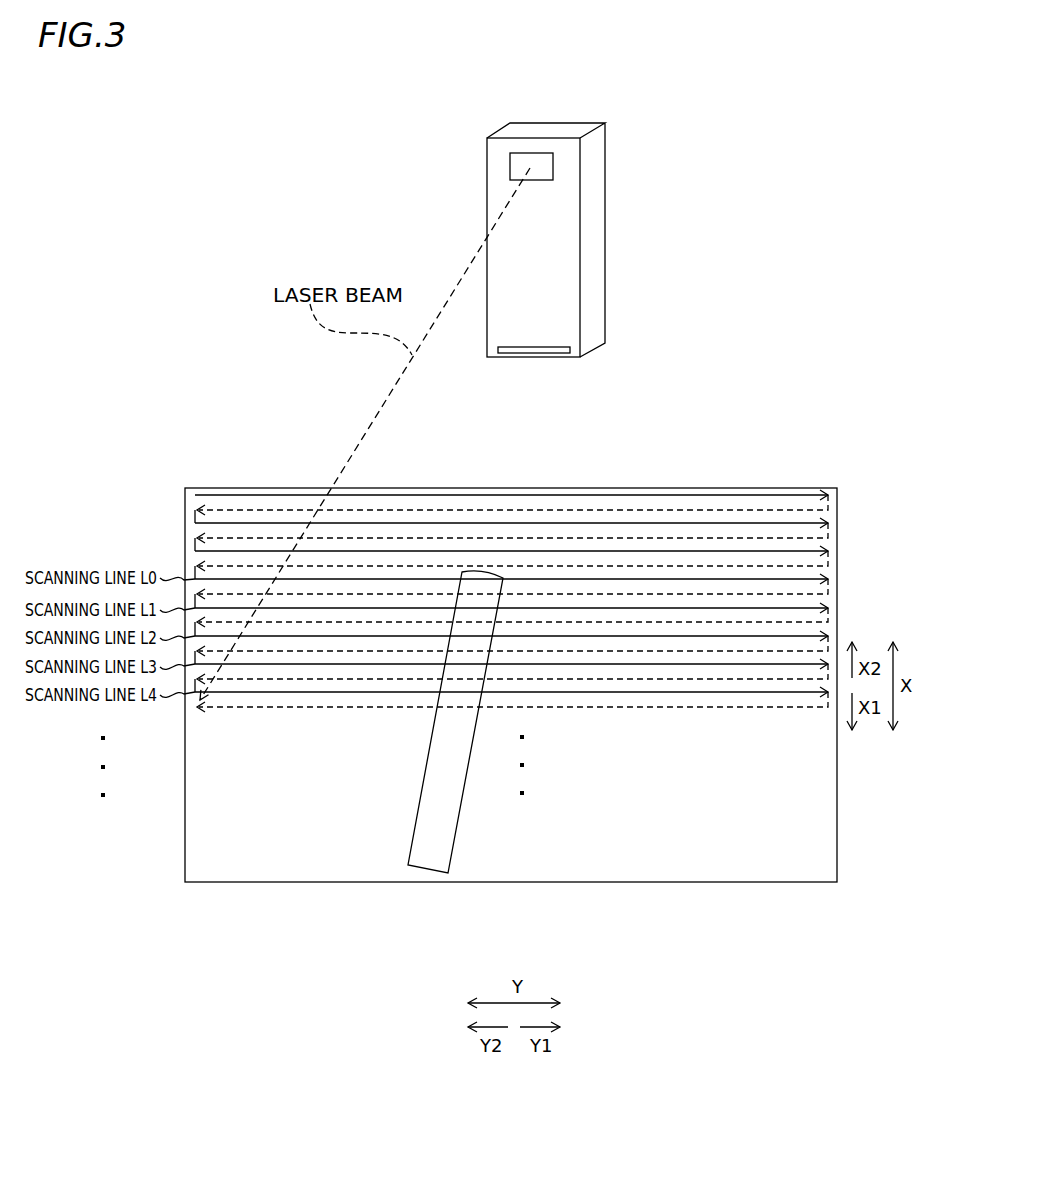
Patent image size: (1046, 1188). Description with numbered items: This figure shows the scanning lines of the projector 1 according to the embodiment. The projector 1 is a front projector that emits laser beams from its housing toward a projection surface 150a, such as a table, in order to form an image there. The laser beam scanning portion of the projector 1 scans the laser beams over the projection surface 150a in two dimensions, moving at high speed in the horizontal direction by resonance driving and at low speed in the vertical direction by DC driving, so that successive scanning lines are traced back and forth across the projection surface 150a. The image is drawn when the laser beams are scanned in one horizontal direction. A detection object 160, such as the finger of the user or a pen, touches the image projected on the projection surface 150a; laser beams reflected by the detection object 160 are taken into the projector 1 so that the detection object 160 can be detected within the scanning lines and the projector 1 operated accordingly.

The projector 1 is at (640, 247).
The detection object 160 is at (430, 873).
The projection surface 150a is at (622, 882).